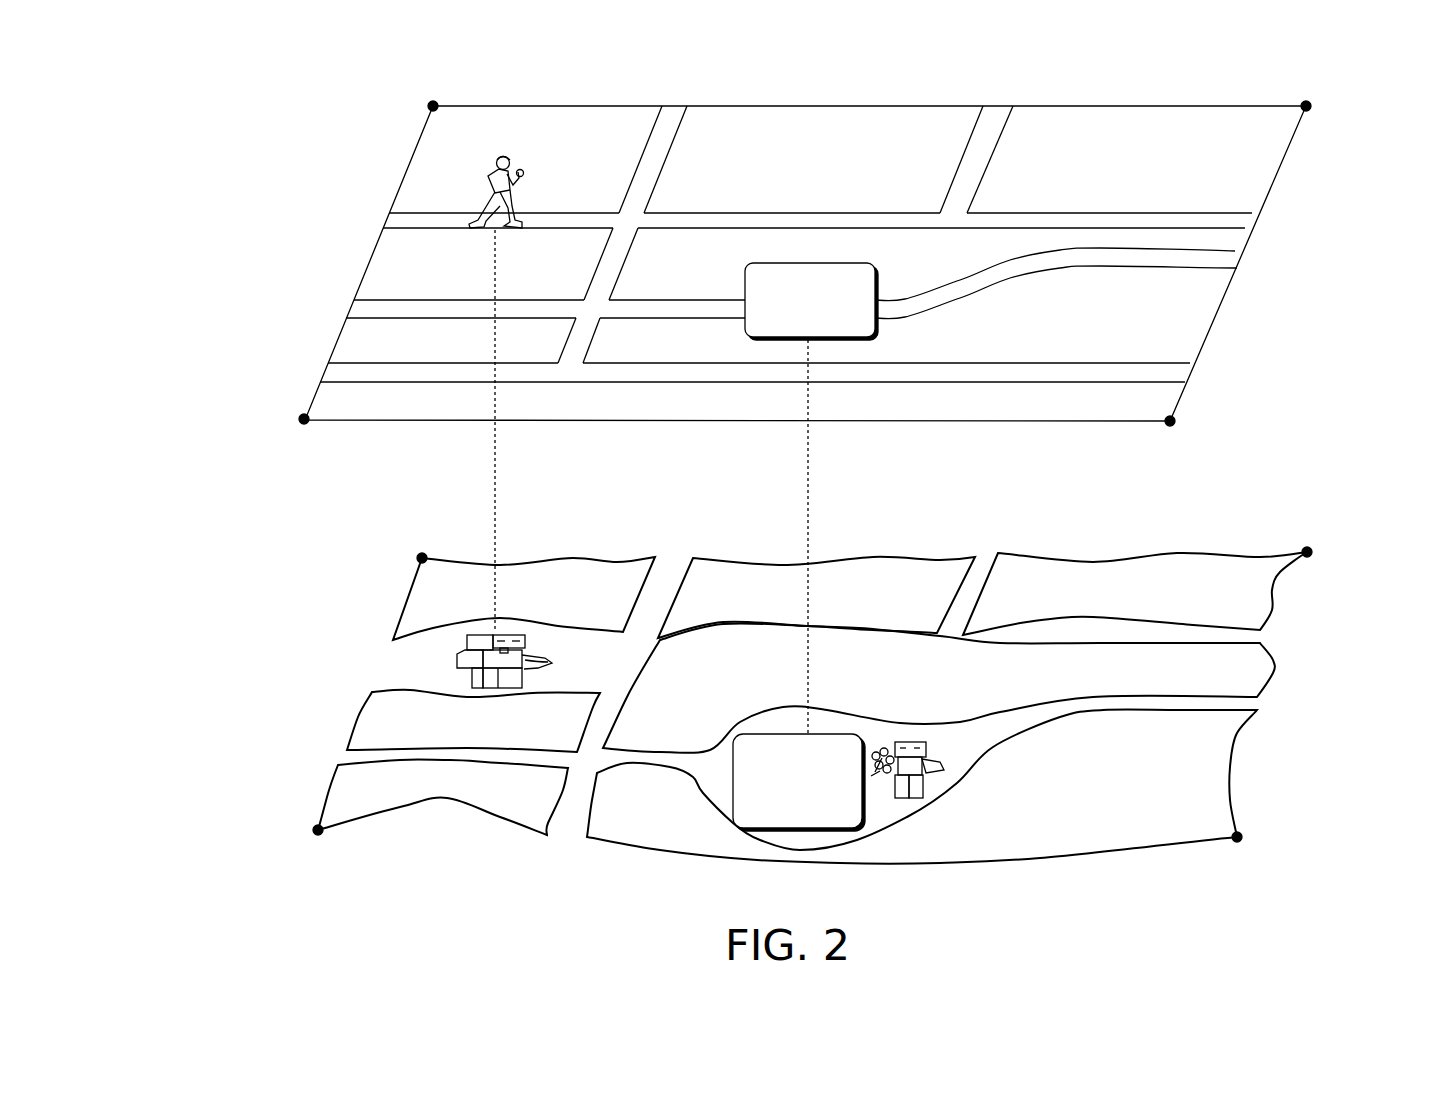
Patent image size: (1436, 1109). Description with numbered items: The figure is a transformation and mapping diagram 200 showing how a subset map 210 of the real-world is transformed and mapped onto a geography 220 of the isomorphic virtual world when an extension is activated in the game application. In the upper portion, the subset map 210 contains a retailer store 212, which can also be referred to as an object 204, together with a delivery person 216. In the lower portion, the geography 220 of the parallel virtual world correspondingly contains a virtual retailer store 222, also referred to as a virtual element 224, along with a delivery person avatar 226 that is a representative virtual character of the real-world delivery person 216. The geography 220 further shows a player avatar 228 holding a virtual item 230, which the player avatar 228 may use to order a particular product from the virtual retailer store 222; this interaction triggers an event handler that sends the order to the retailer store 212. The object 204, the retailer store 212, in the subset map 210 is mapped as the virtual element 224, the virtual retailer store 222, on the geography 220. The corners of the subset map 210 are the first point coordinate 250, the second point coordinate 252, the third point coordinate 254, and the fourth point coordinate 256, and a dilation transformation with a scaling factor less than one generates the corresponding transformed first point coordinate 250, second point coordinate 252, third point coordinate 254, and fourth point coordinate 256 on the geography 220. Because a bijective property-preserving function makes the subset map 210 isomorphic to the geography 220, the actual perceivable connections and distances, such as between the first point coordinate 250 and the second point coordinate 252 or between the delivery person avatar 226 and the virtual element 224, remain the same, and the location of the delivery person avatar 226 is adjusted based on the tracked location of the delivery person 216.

The transformation and mapping diagram 200 is at (752, 481).
The object 204 is at (806, 249).
The subset map 210 is at (352, 126).
The retailer store 212 is at (794, 331).
The delivery person 216 is at (532, 153).
The geography 220 is at (313, 530).
The virtual retailer store 222 is at (782, 826).
The virtual element 224 is at (760, 741).
The delivery person avatar 226 is at (423, 659).
The player avatar 228 is at (940, 787).
The virtual item 230 is at (950, 697).
The point coordinate P1 / P1' 250 is at (433, 106).
The point coordinate P2 / P2' 252 is at (304, 419).
The point coordinate P3 / P3' 254 is at (1306, 106).
The point coordinate P4 / P4' 256 is at (1170, 421).